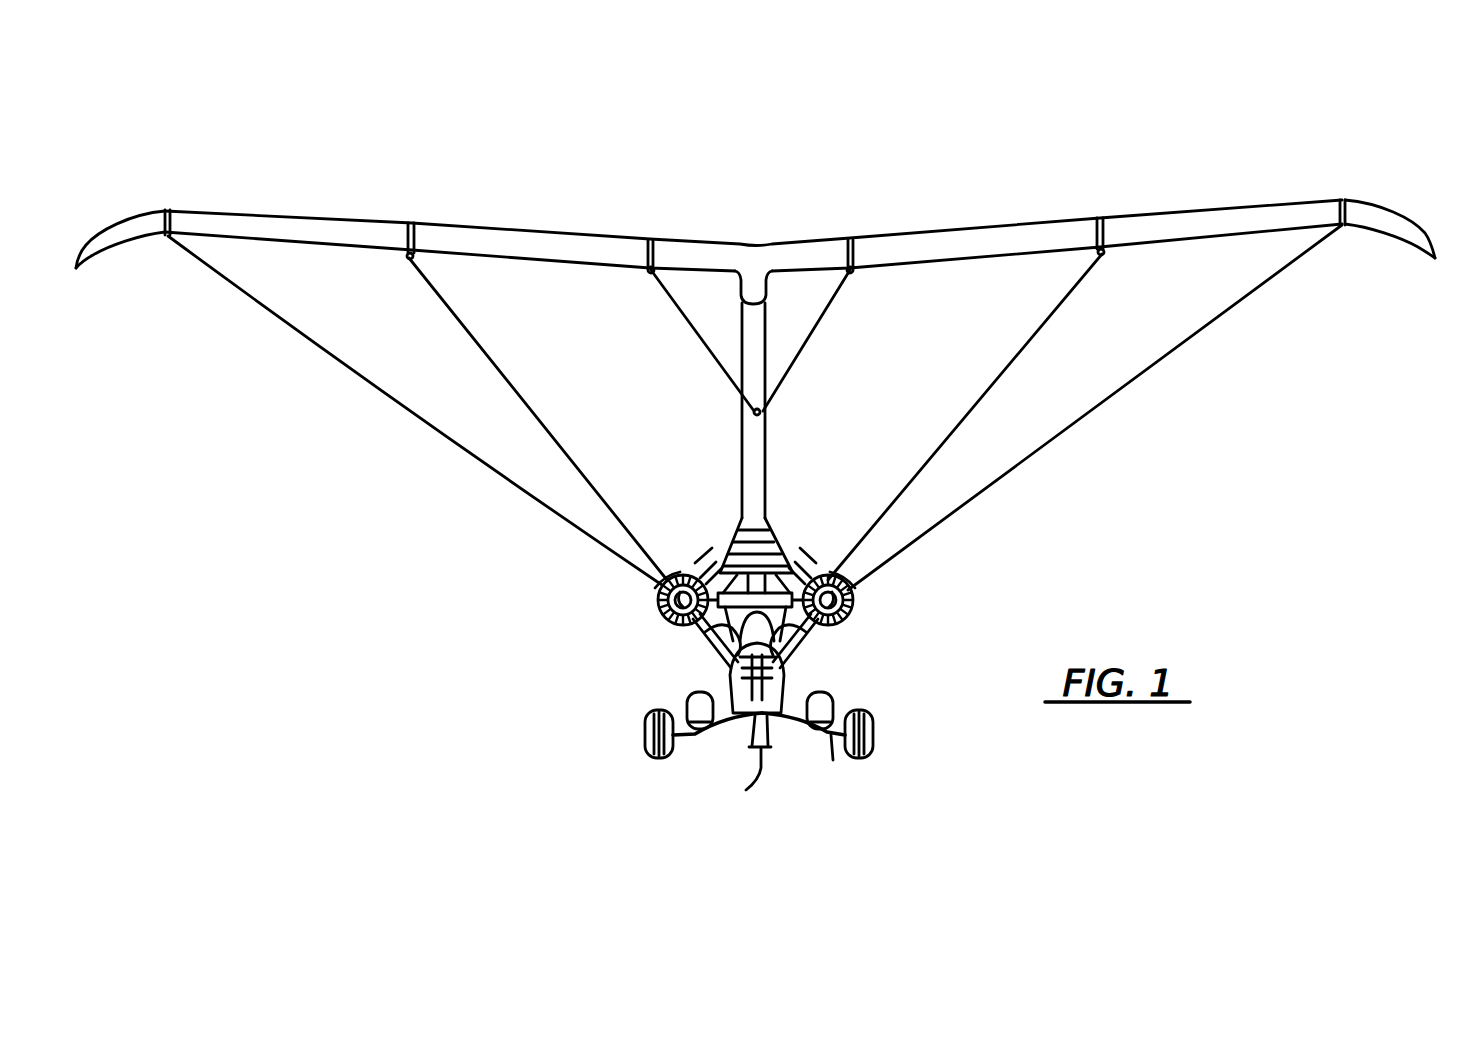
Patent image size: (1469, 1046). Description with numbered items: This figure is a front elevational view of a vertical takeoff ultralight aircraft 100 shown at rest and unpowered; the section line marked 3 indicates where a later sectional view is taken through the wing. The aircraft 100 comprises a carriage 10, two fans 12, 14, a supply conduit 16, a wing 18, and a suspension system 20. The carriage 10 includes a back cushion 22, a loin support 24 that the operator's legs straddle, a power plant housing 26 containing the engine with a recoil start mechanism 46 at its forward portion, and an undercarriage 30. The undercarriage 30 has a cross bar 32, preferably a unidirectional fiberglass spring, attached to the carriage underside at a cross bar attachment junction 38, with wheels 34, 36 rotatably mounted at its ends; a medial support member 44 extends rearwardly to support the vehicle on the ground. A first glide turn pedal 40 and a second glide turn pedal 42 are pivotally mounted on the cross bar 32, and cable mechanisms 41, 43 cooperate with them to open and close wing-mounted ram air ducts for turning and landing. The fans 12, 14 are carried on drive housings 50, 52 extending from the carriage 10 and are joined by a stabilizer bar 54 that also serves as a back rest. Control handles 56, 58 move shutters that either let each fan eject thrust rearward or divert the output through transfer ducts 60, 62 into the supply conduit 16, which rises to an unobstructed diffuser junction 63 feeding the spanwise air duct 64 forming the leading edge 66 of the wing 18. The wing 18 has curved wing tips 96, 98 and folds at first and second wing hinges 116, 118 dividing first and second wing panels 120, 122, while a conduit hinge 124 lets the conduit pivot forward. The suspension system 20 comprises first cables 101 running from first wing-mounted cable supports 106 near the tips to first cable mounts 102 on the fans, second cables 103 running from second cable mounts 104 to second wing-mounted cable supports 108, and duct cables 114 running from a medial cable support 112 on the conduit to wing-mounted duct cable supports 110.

The section line 3- 3 is at (343, 205).
The carriage 10 is at (592, 679).
The fan 12 is at (656, 603).
The fan 14 is at (855, 603).
The supply conduit 16 is at (765, 421).
The wing 18 is at (583, 208).
The suspension system 20 is at (1160, 412).
The back cushion 22 is at (778, 520).
The loin support 24 is at (795, 620).
The power plant housing 26 is at (785, 662).
The undercarriage 30 is at (695, 766).
The cross bar 32 is at (833, 760).
The wheel 34 is at (658, 758).
The wheel 36 is at (866, 758).
The cross bar attachment junction 38 is at (768, 718).
The first glide turn pedal 40 is at (690, 712).
The cable mechanism 41 is at (690, 698).
The second glide turn pedal 42 is at (835, 712).
The cable mechanism 43 is at (828, 698).
The medial support member 44 is at (746, 790).
The recoil start mechanism 46 is at (730, 665).
The drive housing 50 is at (725, 652).
The drive housing 52 is at (790, 650).
The stabilizer bar 54 is at (705, 628).
The control handle 56 is at (697, 572).
The control handle 58 is at (818, 570).
The transfer duct 60 is at (712, 560).
The transfer duct 62 is at (800, 560).
The diffuser junction 63 is at (768, 290).
The spanwise air duct 64 is at (520, 256).
The leading edge 66 is at (275, 240).
The curved wing tip 96 is at (118, 212).
The curved wing tip 98 is at (1380, 200).
The vertical takeoff ultralight aircraft 100 is at (398, 522).
The first cables 101 is at (500, 488).
The first cable mount 102 is at (650, 588).
The second cables 103 is at (546, 442).
The second cable mount 104 is at (668, 580).
The first wing-mounted cable support 106 is at (160, 238).
The second wing-mounted cable support 108 is at (405, 260).
The wing-mounted duct cable support 110 is at (645, 275).
The medial cable support 112 is at (748, 412).
The duct cable 114 is at (695, 352).
The first wing hinge 116 is at (415, 220).
The second wing hinge 118 is at (655, 238).
The first wing panel 120 is at (222, 213).
The second wing panel 122 is at (530, 228).
The conduit hinge 124 is at (748, 488).